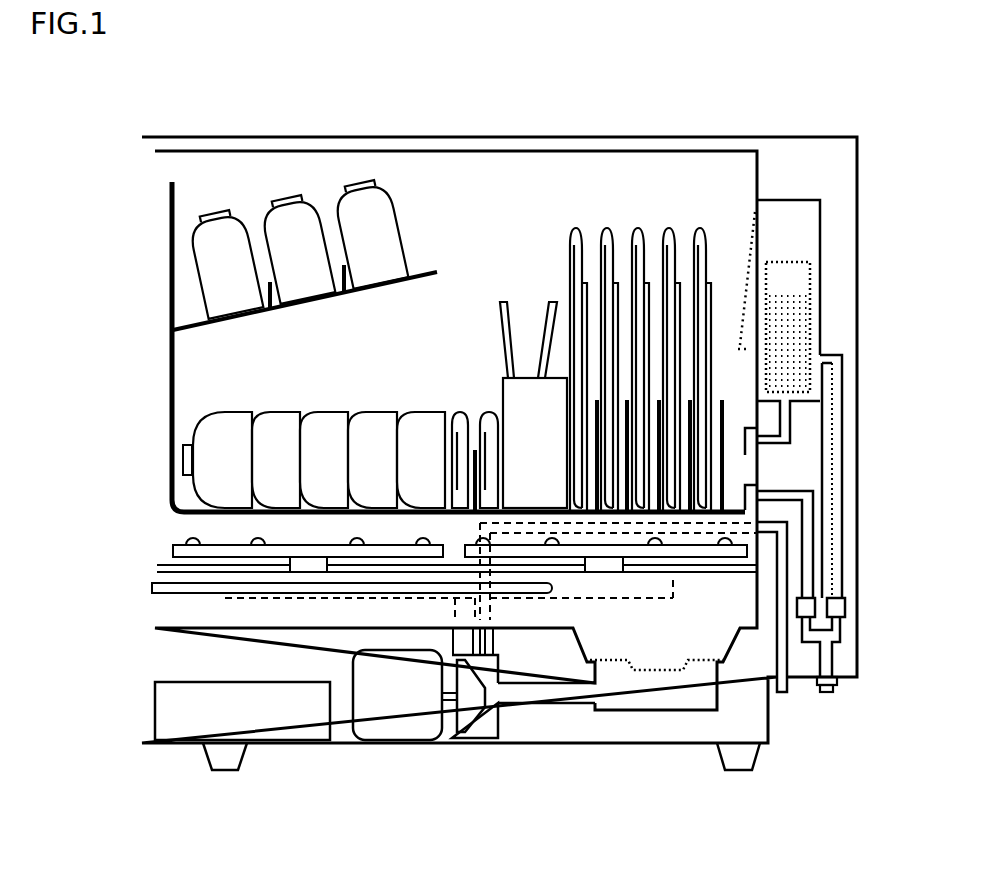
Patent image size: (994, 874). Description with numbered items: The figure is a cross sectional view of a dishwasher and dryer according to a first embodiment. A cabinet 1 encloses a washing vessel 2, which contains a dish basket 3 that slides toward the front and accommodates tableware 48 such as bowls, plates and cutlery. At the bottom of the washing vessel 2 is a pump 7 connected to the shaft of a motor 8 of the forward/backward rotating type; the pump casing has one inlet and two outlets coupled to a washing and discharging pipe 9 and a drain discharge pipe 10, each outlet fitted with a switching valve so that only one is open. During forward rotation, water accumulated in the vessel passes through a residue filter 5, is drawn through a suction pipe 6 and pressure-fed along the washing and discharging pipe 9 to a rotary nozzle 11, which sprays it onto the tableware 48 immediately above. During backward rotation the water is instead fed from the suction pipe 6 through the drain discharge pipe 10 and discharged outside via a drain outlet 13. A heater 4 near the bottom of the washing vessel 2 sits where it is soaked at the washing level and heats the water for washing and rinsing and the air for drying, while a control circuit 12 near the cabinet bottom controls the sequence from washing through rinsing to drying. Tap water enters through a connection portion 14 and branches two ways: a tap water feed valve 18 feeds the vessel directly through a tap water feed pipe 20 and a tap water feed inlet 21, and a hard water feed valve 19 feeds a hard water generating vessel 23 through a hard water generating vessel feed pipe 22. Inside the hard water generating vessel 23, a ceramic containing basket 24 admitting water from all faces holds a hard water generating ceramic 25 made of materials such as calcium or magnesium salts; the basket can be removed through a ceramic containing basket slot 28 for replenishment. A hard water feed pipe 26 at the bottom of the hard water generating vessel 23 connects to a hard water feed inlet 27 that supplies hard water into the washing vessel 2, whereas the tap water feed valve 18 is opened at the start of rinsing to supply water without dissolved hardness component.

The cabinet 1 is at (142, 162).
The washing vessel 2 is at (155, 228).
The dish basket 3 is at (172, 362).
The tableware 48 is at (217, 430).
The rotary nozzle 11 is at (173, 549).
The heater 4 is at (307, 585).
The drain discharge pipe 10 is at (488, 640).
The control circuit 12 is at (180, 720).
The motor 8 is at (381, 722).
The washing and discharging pipe 9 is at (463, 642).
The pump 7 is at (483, 725).
The suction pipe 6 is at (560, 697).
The residue filter 5 is at (655, 673).
The drain outlet 13 is at (783, 692).
The connection portion 14 is at (827, 692).
The tap water feed valve 18 is at (808, 605).
The hard water feed valve 19 is at (840, 608).
The tap water feed pipe 20 is at (808, 540).
The tap water feed inlet 21 is at (750, 493).
The hard water generating vessel feed pipe 22 is at (838, 507).
The hard water generating vessel 23 is at (820, 230).
The ceramic containing basket 24 is at (810, 277).
The hard water generating ceramic 25 is at (795, 323).
The hard water feed pipe 26 is at (785, 418).
The hard water feed inlet 27 is at (757, 440).
The ceramic containing basket slot 28 is at (750, 275).